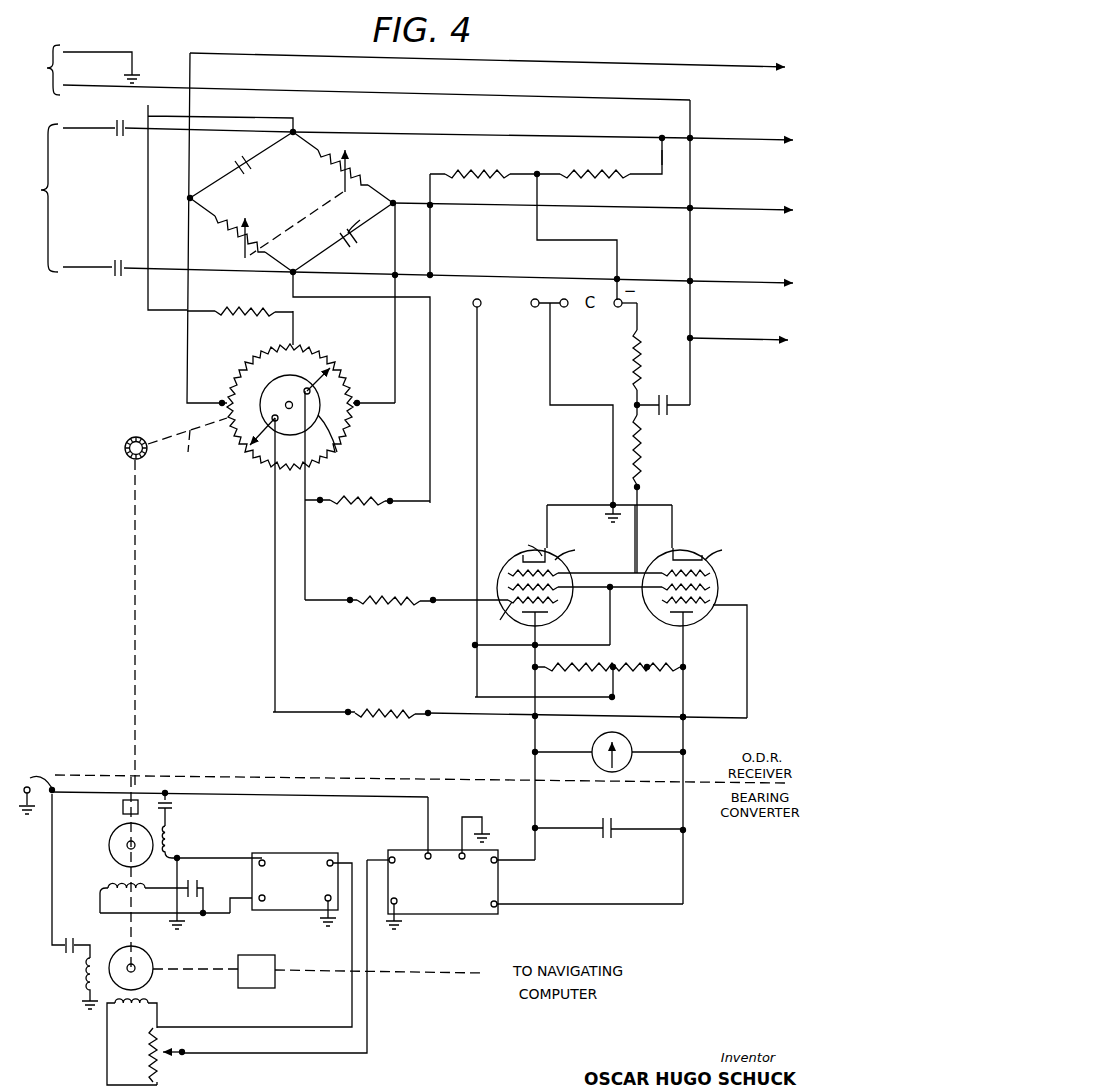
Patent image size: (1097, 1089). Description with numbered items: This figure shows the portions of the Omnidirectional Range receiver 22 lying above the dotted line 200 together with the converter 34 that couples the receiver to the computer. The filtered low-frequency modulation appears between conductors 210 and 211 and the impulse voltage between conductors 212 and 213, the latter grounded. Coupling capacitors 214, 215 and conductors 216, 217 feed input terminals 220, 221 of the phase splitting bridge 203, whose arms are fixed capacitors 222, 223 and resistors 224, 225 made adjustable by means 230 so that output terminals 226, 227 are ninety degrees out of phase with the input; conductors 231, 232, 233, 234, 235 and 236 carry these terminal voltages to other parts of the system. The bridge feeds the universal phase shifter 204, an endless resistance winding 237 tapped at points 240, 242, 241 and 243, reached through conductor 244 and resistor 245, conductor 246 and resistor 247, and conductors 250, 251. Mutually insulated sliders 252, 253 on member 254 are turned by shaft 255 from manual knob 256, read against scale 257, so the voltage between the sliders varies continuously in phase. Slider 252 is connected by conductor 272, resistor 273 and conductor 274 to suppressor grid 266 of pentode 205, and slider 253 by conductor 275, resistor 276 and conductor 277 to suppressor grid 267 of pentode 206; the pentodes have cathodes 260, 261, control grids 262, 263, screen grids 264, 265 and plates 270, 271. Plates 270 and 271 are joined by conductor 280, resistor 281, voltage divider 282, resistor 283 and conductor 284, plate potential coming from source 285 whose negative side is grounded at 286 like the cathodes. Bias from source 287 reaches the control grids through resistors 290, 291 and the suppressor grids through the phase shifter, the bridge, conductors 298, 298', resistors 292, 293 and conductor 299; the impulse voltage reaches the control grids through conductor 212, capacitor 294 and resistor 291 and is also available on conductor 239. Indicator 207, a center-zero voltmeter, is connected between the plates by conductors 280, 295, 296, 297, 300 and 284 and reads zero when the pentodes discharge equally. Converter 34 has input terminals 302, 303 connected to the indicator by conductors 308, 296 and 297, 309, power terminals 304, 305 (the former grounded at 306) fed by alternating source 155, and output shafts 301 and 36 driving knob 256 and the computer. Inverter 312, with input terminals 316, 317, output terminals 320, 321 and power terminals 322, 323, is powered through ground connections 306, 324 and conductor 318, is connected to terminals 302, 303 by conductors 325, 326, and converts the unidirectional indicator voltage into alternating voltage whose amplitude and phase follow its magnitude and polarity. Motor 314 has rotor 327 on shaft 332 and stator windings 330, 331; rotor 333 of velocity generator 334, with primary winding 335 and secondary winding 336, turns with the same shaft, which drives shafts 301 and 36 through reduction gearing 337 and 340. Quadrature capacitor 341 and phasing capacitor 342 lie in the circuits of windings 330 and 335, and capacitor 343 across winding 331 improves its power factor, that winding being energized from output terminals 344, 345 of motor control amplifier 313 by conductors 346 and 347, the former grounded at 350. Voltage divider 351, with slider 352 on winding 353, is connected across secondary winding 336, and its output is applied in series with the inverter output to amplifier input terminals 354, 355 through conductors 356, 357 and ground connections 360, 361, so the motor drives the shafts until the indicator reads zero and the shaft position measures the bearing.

The receiver 22 is at (780, 729).
The converter 34 is at (770, 871).
The output shaft 36 is at (402, 979).
The alternating voltage source 155 is at (45, 778).
The dotted line 200 is at (192, 777).
The phase splitting bridge 203 is at (275, 186).
The universal phase shifter 204 is at (277, 373).
The pentode 205 is at (520, 532).
The pentode 206 is at (700, 532).
The indicator 207 is at (626, 738).
The conductor 210 is at (76, 130).
The conductor 211 is at (70, 266).
The conductor 212 is at (78, 90).
The conductor 213 is at (84, 52).
The coupling capacitor 214 is at (120, 119).
The coupling capacitor 215 is at (112, 272).
The conductor 216 is at (190, 137).
The conductor 217 is at (213, 275).
The input terminal 220 is at (298, 129).
The input terminal 221 is at (314, 256).
The fixed capacitor 222 is at (238, 176).
The fixed capacitor 223 is at (360, 217).
The resistor 224 is at (358, 175).
The resistor 225 is at (236, 231).
The output terminal 226 is at (189, 197).
The output terminal 227 is at (395, 200).
The adjusting means 230 is at (300, 239).
The conductor 231 is at (594, 137).
The conductor 232 is at (735, 138).
The conductor 233 is at (340, 268).
The conductor 234 is at (736, 280).
The conductor 235 is at (655, 62).
The conductor 236 is at (736, 208).
The endless resistance winding 237 is at (312, 345).
The conductor 239 is at (718, 338).
The tap 240 is at (292, 338).
The tap 241 is at (290, 470).
The tap 242 is at (222, 400).
The tap 243 is at (360, 407).
The conductor 244 is at (148, 184).
The resistor 245 is at (244, 312).
The conductor 246 is at (432, 337).
The resistor 247 is at (355, 504).
The conductor 250 is at (187, 340).
The conductor 251 is at (397, 330).
The slider 252 is at (338, 384).
The slider 253 is at (262, 442).
The member 254 is at (340, 452).
The shaft 255 is at (188, 452).
The manual knob 256 is at (128, 453).
The scale 257 is at (136, 436).
The cathode 260 is at (520, 543).
The cathode 261 is at (724, 548).
The control grid 262 is at (577, 548).
The control grid 263 is at (673, 565).
The screen grid 264 is at (510, 576).
The screen grid 265 is at (712, 588).
The suppressor grid 266 is at (496, 619).
The suppressor grid 267 is at (712, 608).
The plate 270 is at (540, 614).
The plate 271 is at (680, 632).
The conductor 272 is at (307, 572).
The resistor 273 is at (375, 599).
The conductor 274 is at (450, 598).
The conductor 275 is at (276, 666).
The resistor 276 is at (386, 710).
The conductor 277 is at (432, 712).
The conductor 280 is at (535, 667).
The resistor 281 is at (556, 670).
The voltage divider 282 is at (616, 670).
The resistor 283 is at (665, 672).
The conductor 284 is at (685, 650).
The source 285 is at (490, 312).
The ground connection 286 is at (610, 503).
The bias voltage source 287 is at (576, 312).
The resistor 290 is at (641, 346).
The resistor 291 is at (641, 462).
The resistor 292 is at (484, 170).
The resistor 293 is at (588, 170).
The capacitor 294 is at (672, 416).
The conductor 295 is at (533, 734).
The conductor 296 is at (556, 752).
The conductor 297 is at (660, 770).
The conductor 298 is at (454, 224).
The conductor 298' is at (635, 178).
The conductor 299 is at (592, 240).
The conductor 300 is at (688, 737).
The output shaft 301 is at (138, 621).
The input terminal 302 is at (537, 825).
The input terminal 303 is at (683, 826).
The power terminal 304 is at (26, 786).
The power terminal 305 is at (53, 786).
The ground connection 306 is at (37, 838).
The conductor 308 is at (533, 769).
The conductor 309 is at (701, 840).
The inverter 312 is at (392, 856).
The motor control amplifier 313 is at (290, 852).
The motor 314 is at (57, 874).
The input terminal 316 is at (500, 863).
The input terminal 317 is at (500, 903).
The conductor 318 is at (208, 797).
The output terminal 320 is at (390, 857).
The output terminal 321 is at (400, 905).
The power terminal 322 is at (430, 825).
The power terminal 323 is at (466, 855).
The ground connection 324 is at (485, 818).
The conductor 325 is at (537, 848).
The conductor 326 is at (683, 868).
The rotor 327 is at (109, 843).
The stator winding 330 is at (168, 838).
The stator winding 331 is at (102, 900).
The shaft 332 is at (129, 921).
The rotor 333 is at (154, 963).
The velocity generator 334 is at (164, 999).
The primary winding 335 is at (85, 968).
The secondary winding 336 is at (128, 1009).
The reduction gearing 337 is at (122, 807).
The reduction gearing 340 is at (250, 989).
The quadrature capacitor 341 is at (172, 808).
The phasing capacitor 342 is at (55, 941).
The capacitor 343 is at (200, 889).
The output terminal 344 is at (263, 859).
The output terminal 345 is at (262, 902).
The conductor 346 is at (232, 857).
The conductor 347 is at (232, 906).
The ground connection 350 is at (182, 920).
The voltage divider 351 is at (172, 1058).
The slider 352 is at (170, 1051).
The winding 353 is at (153, 1068).
The input terminal 354 is at (332, 859).
The input terminal 355 is at (325, 903).
The conductor 356 is at (303, 1027).
The conductor 357 is at (284, 1056).
The ground connection 360 is at (327, 936).
The ground connection 361 is at (388, 924).